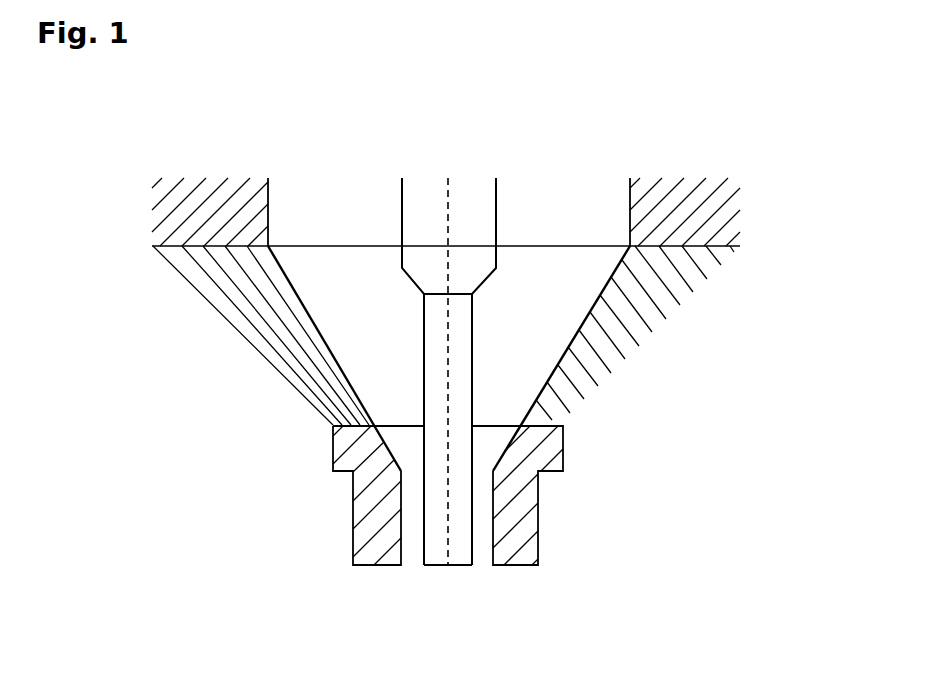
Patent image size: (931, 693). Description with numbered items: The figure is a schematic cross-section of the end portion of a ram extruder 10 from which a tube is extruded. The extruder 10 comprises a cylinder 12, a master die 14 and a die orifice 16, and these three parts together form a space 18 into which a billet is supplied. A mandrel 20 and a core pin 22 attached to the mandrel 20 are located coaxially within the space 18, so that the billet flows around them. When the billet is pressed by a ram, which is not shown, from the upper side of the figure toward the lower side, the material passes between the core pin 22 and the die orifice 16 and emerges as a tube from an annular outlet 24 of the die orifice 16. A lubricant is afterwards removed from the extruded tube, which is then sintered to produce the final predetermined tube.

The extruder 10 is at (227, 348).
The cylinder 12 is at (653, 230).
The master die 14 is at (623, 350).
The die orifice 16 is at (520, 487).
The space 18 is at (338, 292).
The mandrel 20 is at (496, 200).
The core pin 22 is at (421, 371).
The annular outlet 24 is at (482, 557).